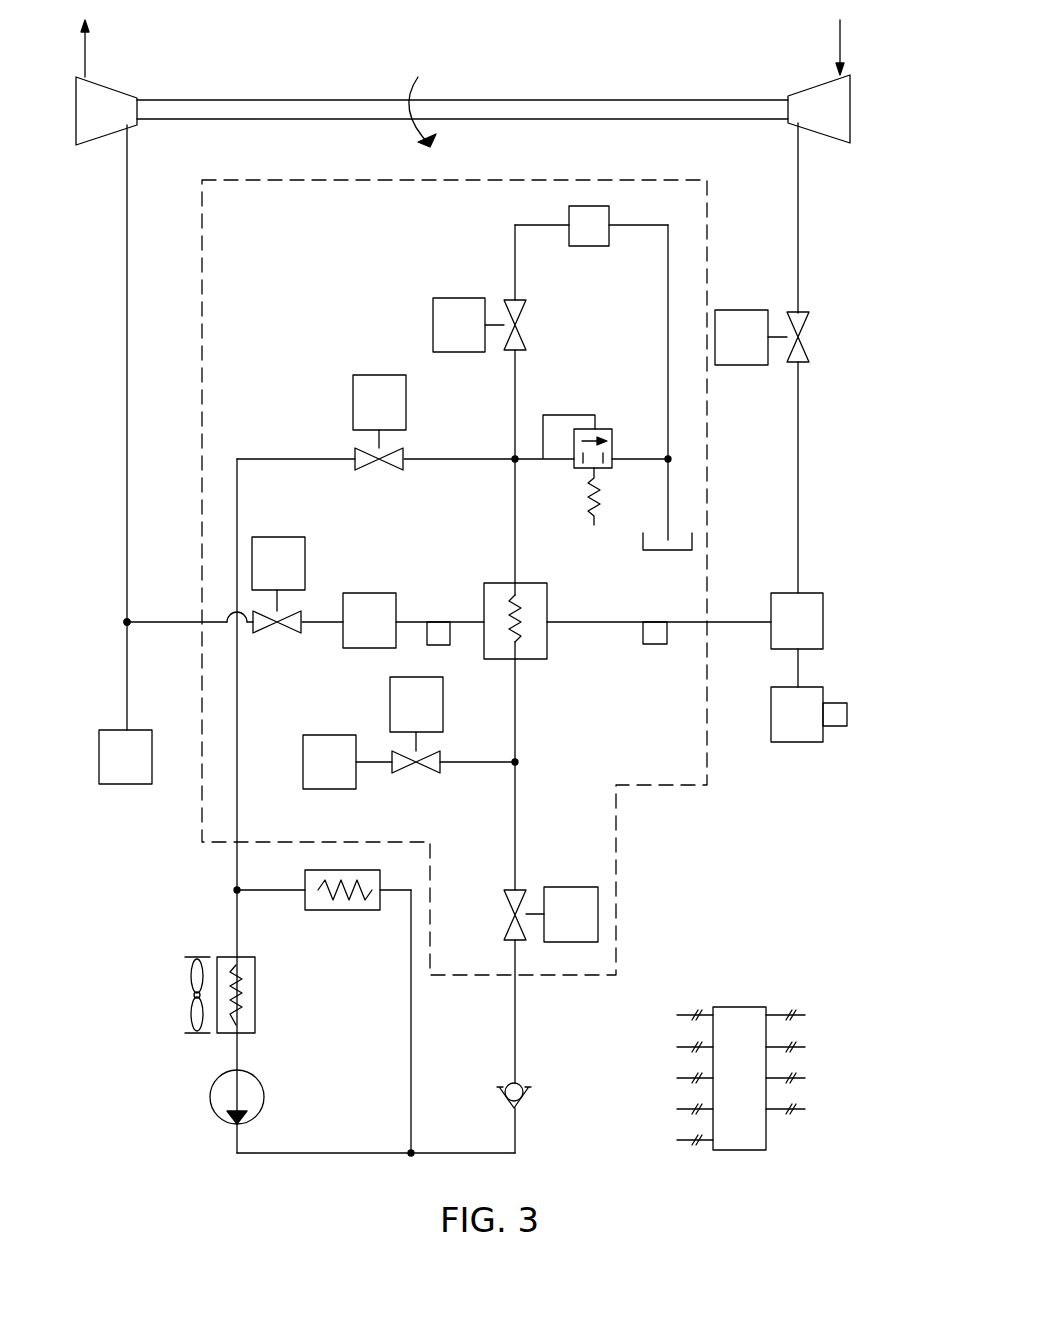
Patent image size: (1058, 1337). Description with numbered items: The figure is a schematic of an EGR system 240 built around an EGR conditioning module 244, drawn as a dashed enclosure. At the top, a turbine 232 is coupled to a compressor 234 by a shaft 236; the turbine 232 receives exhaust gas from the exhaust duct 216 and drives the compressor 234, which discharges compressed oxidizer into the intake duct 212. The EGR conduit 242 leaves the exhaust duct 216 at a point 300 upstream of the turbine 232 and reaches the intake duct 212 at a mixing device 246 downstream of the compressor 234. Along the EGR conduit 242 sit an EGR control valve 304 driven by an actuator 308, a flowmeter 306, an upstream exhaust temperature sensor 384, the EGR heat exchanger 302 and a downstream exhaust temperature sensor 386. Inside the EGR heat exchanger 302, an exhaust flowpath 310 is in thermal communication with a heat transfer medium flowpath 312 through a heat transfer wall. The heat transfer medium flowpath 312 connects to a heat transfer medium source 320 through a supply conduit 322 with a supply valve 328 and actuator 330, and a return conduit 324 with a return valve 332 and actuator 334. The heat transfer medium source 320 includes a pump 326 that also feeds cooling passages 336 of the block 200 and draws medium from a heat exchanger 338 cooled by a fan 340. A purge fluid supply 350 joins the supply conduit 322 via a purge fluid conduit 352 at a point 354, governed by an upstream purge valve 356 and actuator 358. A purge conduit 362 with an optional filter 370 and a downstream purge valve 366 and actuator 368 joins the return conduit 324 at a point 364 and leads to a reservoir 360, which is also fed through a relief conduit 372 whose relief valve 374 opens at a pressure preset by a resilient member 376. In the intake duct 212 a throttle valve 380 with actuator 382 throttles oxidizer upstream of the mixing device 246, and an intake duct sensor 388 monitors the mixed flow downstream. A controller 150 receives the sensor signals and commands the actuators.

The controller 150 is at (727, 1088).
The block 200 is at (319, 910).
The intake duct 212 is at (810, 726).
The exhaust duct 216 is at (138, 766).
The turbine 232 is at (98, 117).
The compressor 234 is at (810, 117).
The shaft 236 is at (260, 100).
The EGR system 240 is at (604, 42).
The EGR conduit 242 is at (164, 616).
The EGR conditioning module 244 is at (712, 758).
The mixing device 246 is at (810, 632).
The point 300 is at (122, 622).
The EGR heat exchanger 302 is at (490, 576).
The EGR control valve 304 is at (284, 634).
The flowmeter 306 is at (382, 632).
The actuator 308 is at (291, 573).
The exhaust flowpath 310 is at (540, 594).
The heat transfer medium flowpath 312 is at (527, 640).
The heat transfer medium source 320 is at (195, 1176).
The supply conduit 322 is at (518, 836).
The return conduit 324 is at (274, 456).
The pump 326 is at (210, 1098).
The supply valve 328 is at (505, 920).
The actuator 330 is at (584, 924).
The return valve 332 is at (391, 472).
The actuator 334 is at (392, 412).
The cooling passages 336 is at (357, 895).
The heat exchanger 338 is at (258, 1011).
The fan 340 is at (190, 975).
The purge fluid supply 350 is at (342, 772).
The purge fluid conduit 352 is at (480, 760).
The point 354 is at (520, 762).
The upstream purge valve 356 is at (420, 775).
The actuator 358 is at (429, 714).
The reservoir 360 is at (659, 562).
The purge conduit 362 is at (512, 412).
The point 364 is at (512, 476).
The downstream purge valve 366 is at (528, 332).
The actuator 368 is at (472, 336).
The filter 370 is at (590, 282).
The relief conduit 372 is at (632, 465).
The relief valve 374 is at (598, 427).
The resilient member 376 is at (588, 502).
The throttle valve 380 is at (810, 345).
The actuator 382 is at (754, 348).
The upstream exhaust temperature sensor 384 is at (436, 632).
The downstream exhaust temperature sensor 386 is at (654, 640).
The intake duct sensor 388 is at (836, 726).